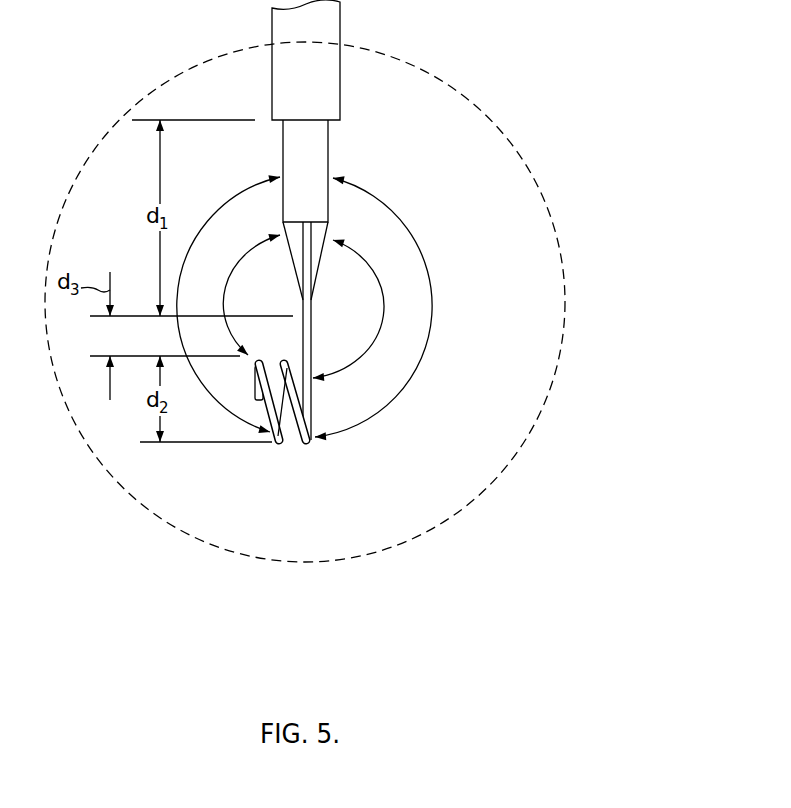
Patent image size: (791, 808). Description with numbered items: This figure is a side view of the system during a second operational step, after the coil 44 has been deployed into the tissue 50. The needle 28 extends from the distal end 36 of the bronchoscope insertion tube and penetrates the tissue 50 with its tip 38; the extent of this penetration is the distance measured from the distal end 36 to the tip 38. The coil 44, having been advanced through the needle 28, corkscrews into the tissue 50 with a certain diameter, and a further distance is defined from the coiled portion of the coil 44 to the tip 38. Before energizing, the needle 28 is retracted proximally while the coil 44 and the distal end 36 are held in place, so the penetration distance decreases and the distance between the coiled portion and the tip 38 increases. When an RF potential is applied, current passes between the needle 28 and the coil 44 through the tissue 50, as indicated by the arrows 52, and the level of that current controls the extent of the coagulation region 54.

The needle 28 is at (328, 152).
The distal end 36 is at (340, 28).
The tip 38 is at (320, 265).
The coil 44 is at (281, 445).
The tissue 50 is at (207, 513).
The arrows 52 is at (245, 222).
The coagulation region 54 is at (92, 448).